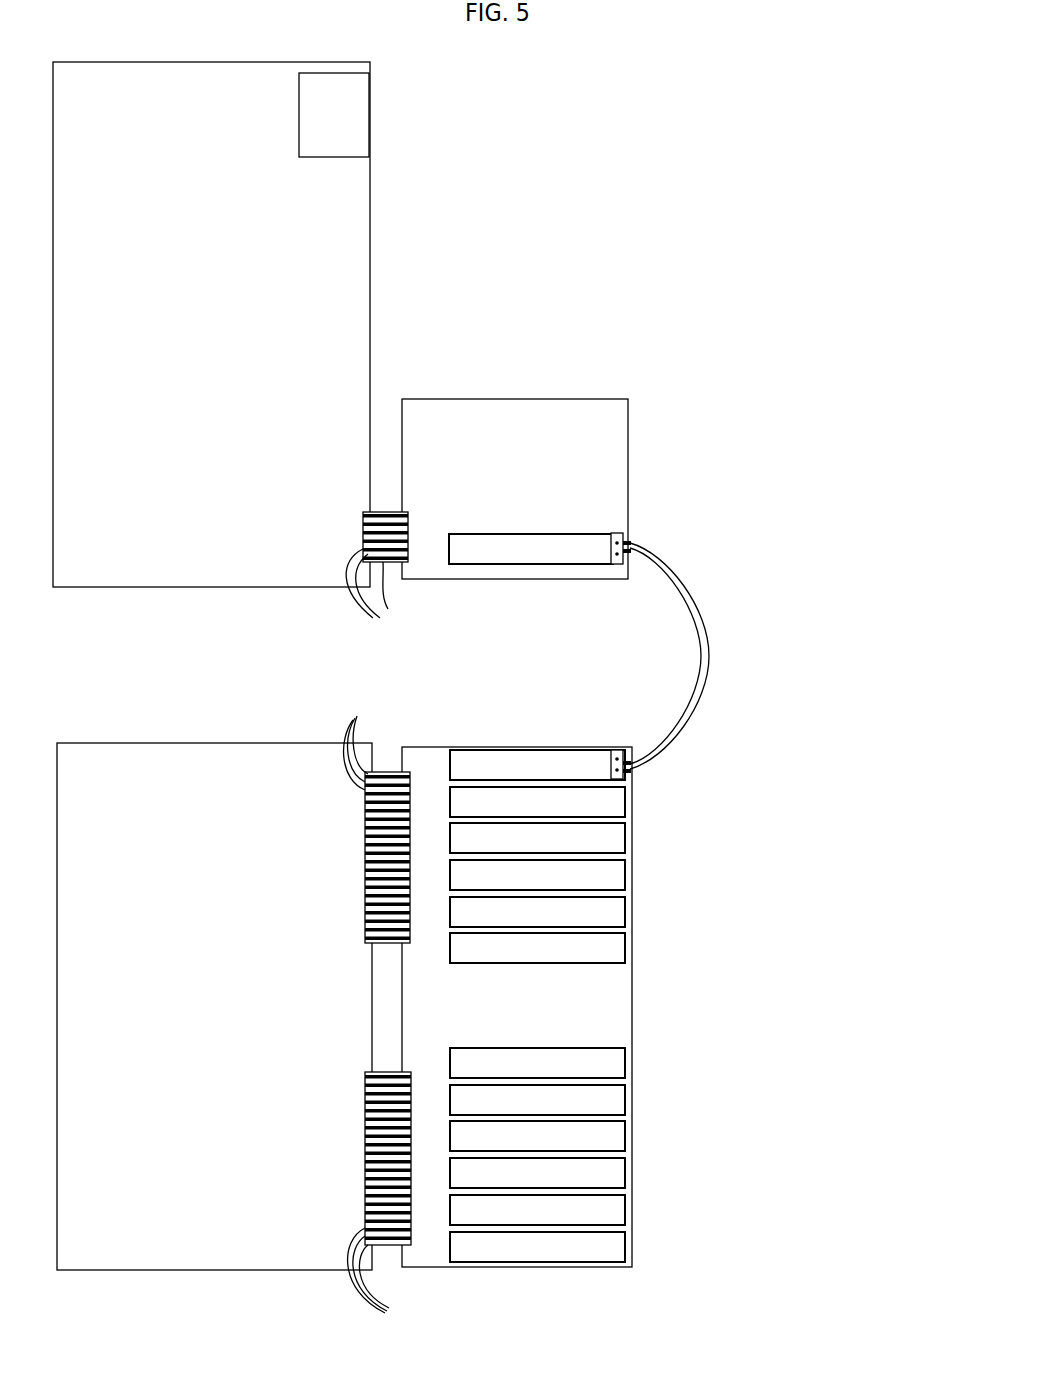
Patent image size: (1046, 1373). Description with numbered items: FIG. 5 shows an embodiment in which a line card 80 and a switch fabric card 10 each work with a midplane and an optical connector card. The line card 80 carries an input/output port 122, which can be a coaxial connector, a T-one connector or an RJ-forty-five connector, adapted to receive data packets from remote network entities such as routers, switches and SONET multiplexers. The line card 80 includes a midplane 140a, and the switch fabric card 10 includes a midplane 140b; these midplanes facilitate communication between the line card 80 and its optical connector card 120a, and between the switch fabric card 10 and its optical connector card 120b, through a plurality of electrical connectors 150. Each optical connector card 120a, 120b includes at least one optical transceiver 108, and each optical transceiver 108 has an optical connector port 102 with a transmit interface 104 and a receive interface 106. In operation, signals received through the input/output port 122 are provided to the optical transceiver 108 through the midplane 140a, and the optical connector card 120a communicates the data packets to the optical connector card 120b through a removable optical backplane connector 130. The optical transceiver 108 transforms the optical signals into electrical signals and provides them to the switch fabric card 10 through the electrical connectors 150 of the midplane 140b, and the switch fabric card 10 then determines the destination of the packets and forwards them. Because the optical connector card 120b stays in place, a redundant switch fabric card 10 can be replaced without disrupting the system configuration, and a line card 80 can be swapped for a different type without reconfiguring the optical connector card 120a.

The line card 80 is at (113, 117).
The input/output port 122 is at (344, 117).
The switch fabric card 10 is at (112, 794).
The optical connector card 120a is at (470, 426).
The optical connector card 120b is at (620, 1029).
The midplane 140a is at (345, 546).
The midplane 140b is at (355, 914).
The electrical connectors 150 is at (385, 936).
The optical transceiver 108 is at (452, 526).
The optical connector port 102 is at (617, 532).
The transmit interface 104 is at (632, 530).
The receive interface 106 is at (628, 570).
The removable optical backplane connector 130 is at (714, 654).